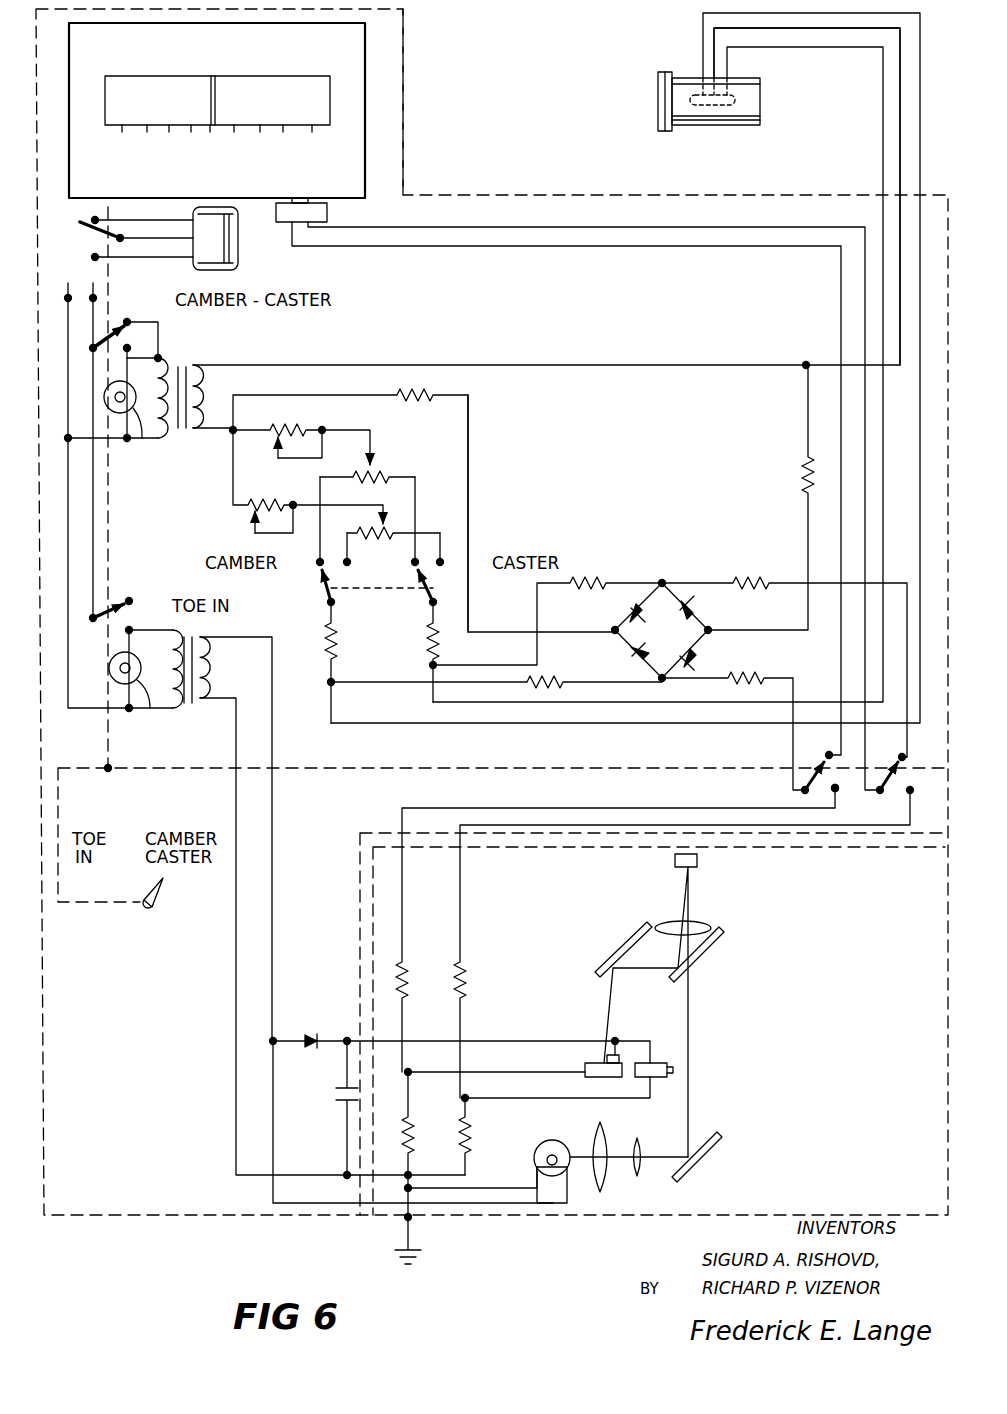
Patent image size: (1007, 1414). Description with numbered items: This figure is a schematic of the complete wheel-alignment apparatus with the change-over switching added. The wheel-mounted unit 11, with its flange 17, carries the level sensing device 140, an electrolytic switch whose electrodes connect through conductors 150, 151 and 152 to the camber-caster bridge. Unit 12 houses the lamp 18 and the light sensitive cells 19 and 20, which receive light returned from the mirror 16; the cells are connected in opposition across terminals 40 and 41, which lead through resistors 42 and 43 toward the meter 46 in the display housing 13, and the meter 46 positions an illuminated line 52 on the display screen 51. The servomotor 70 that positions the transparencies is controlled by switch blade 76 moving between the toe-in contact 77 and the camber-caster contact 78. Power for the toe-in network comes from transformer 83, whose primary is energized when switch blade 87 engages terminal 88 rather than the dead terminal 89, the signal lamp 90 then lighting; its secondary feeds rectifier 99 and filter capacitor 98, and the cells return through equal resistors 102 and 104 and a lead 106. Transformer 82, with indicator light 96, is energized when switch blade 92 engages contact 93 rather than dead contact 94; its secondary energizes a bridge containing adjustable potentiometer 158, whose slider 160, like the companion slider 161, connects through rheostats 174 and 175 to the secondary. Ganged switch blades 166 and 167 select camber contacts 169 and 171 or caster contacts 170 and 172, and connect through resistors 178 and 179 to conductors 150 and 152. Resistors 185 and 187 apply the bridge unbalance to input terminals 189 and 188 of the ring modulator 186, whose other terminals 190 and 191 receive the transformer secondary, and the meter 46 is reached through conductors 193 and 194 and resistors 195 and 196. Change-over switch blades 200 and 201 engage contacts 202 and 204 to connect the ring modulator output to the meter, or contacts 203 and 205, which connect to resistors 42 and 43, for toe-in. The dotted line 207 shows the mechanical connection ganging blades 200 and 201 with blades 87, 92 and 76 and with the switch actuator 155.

The sensing unit 11 is at (755, 130).
The optical sensing unit 12 is at (535, 1218).
The display housing 13 is at (403, 125).
The mirror 16 is at (675, 862).
The mounting flange 17 is at (658, 117).
The electrical bulb 18 is at (534, 1163).
The light sensitive cell 19 is at (600, 1062).
The light sensitive cell 20 is at (673, 1070).
The terminal 40 is at (409, 1072).
The terminal 41 is at (468, 1096).
The resistor 42 is at (412, 968).
The resistor 43 is at (470, 975).
The meter 46 is at (327, 214).
The display screen 51 is at (365, 72).
The illuminated line 52 is at (218, 80).
The servomotor 70 is at (238, 262).
The switch blade 76 is at (82, 232).
The toe-in contact 77 is at (92, 260).
The camber-caster contact 78 is at (92, 220).
The transformer 82 is at (186, 445).
The transformer 83 is at (192, 708).
The switch blade 87 is at (93, 624).
The switch terminal 88 is at (130, 627).
The dead terminal 89 is at (133, 598).
The signal lamp 90 is at (138, 696).
The switch blade 92 is at (98, 325).
The fixed contact 93 is at (130, 322).
The dead contact 94 is at (130, 348).
The indicator light 96 is at (125, 429).
The filter capacitor 98 is at (336, 1100).
The rectifier 99 is at (313, 1035).
The resistor 102 is at (414, 1138).
The resistor 104 is at (472, 1140).
The supply lead 106 is at (273, 1200).
The level sensing device 140 is at (740, 118).
The conductor 150 is at (703, 40).
The conductor 151 is at (900, 144).
The conductor 152 is at (883, 177).
The switch actuator 155 is at (146, 912).
The adjustable potentiometer 158 is at (425, 460).
The slider 160 is at (378, 466).
The slider 161 is at (392, 521).
The switch blade 166 is at (326, 582).
The switch blade 167 is at (426, 602).
The camber contact 169 is at (336, 560).
The caster contact 170 is at (350, 562).
The camber contact 171 is at (418, 560).
The caster contact 172 is at (443, 560).
The rheostat 174 is at (282, 424).
The rheostat 175 is at (300, 483).
The resistor 178 is at (326, 640).
The resistor 179 is at (440, 645).
The resistor 185 is at (548, 682).
The ring modulator 186 is at (692, 523).
The resistor 187 is at (590, 580).
The input terminal 188 is at (662, 580).
The input terminal 189 is at (662, 672).
The input terminal 190 is at (622, 630).
The input terminal 191 is at (712, 626).
The conductor 193 is at (508, 225).
The conductor 194 is at (580, 245).
The resistor 195 is at (765, 580).
The resistor 196 is at (765, 678).
The switch blade 200 is at (822, 758).
The switch blade 201 is at (902, 761).
The contact 202 is at (800, 790).
The contact 203 is at (836, 792).
The contact 204 is at (880, 794).
The contact 205 is at (912, 794).
The mechanical connection 207 is at (110, 535).